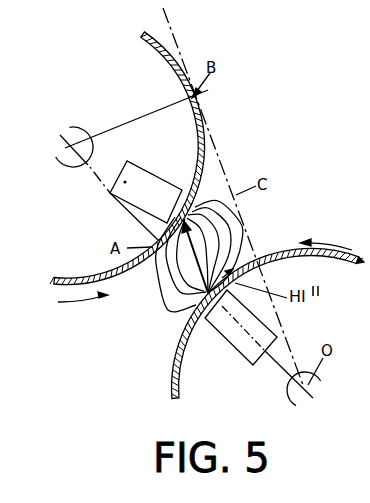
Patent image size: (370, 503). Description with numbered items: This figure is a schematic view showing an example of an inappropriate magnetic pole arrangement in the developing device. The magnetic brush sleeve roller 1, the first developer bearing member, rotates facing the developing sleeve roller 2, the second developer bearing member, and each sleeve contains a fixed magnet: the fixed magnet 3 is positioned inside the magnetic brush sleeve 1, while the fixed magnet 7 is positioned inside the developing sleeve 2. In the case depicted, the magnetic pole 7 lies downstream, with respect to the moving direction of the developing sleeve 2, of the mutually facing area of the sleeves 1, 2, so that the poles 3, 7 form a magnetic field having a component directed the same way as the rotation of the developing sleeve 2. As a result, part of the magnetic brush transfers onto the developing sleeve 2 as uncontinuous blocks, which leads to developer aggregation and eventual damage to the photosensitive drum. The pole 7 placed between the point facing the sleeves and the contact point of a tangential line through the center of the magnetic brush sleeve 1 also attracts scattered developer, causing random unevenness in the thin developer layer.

The magnetic brush sleeve roller 1 is at (291, 252).
The developing sleeve roller 2 is at (173, 46).
The fixed magnet 3 is at (245, 352).
The fixed magnet 7 is at (146, 174).